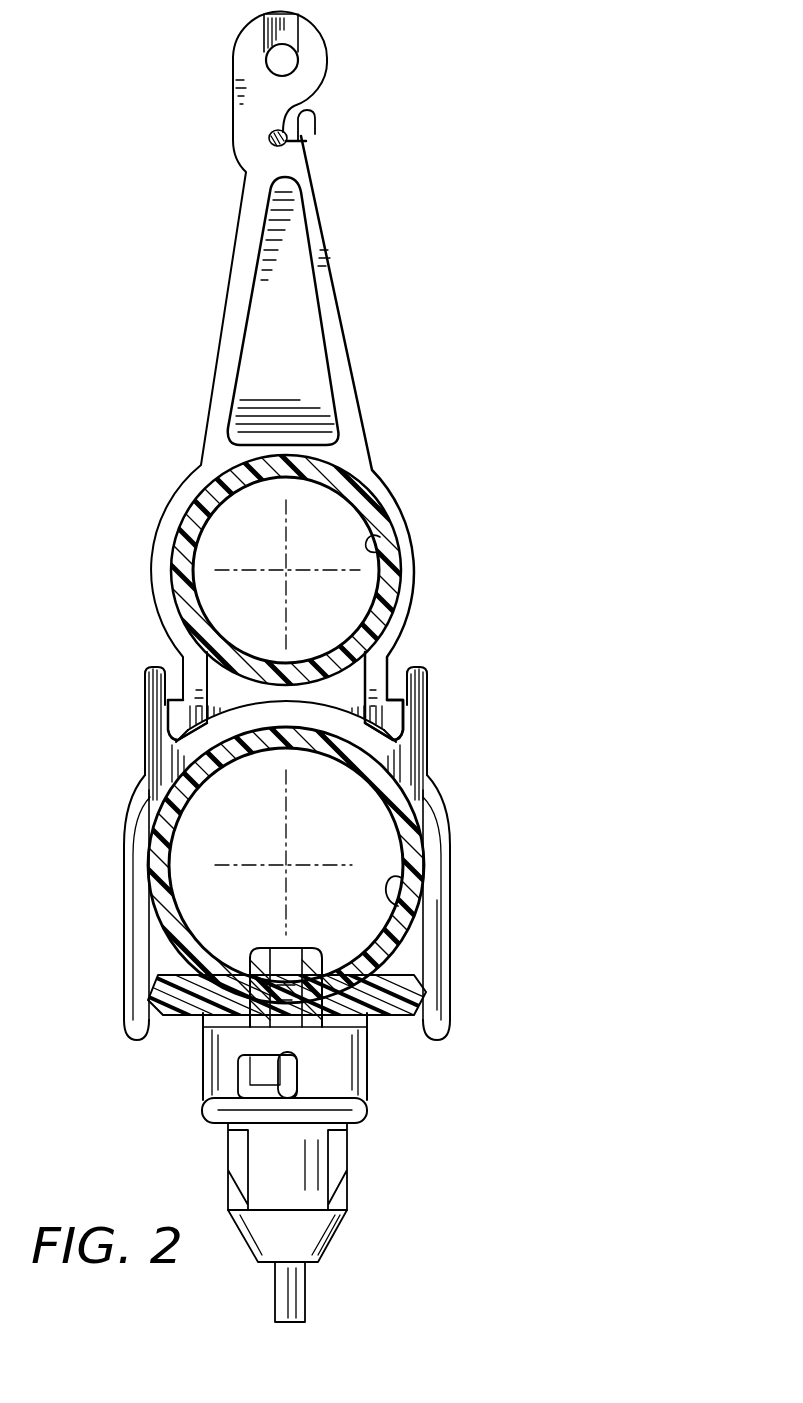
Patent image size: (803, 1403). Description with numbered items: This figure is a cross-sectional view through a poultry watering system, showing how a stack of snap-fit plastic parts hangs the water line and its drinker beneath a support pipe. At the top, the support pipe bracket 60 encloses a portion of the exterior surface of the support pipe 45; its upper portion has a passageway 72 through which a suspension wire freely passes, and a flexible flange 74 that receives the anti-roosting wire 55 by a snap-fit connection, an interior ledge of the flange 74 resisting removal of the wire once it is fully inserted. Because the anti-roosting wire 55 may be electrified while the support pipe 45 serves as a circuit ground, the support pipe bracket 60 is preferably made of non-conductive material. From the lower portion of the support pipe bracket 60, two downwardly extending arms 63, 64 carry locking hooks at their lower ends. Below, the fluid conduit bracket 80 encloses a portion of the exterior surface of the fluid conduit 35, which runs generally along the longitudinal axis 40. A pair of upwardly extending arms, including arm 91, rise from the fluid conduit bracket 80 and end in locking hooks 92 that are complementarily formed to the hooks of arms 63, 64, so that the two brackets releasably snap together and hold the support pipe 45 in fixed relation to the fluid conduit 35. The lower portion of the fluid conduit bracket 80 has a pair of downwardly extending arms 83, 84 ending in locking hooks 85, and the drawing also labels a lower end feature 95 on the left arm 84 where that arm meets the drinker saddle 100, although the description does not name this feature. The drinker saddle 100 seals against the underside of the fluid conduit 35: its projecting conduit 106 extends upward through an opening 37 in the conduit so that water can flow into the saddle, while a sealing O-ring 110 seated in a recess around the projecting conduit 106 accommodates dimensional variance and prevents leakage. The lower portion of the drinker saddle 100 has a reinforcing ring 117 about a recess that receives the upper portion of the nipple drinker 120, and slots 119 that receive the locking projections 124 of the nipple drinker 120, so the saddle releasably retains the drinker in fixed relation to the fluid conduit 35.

The support pipe bracket 60 is at (352, 433).
The passageway 72 is at (297, 62).
The flexible flange 74 is at (314, 115).
The anti-roosting wire 55 is at (300, 135).
The support pipe 45 is at (382, 546).
The downwardly extending arm 64 is at (185, 695).
The downwardly extending arm 63 is at (388, 667).
The fluid conduit bracket 80 is at (291, 843).
The upwardly extending arm 91 is at (162, 718).
The locking hook 92 is at (413, 728).
The longitudinal axis 40 is at (286, 864).
The fluid conduit 35 is at (398, 892).
The downwardly extending arm 84 is at (104, 925).
The downwardly extending arm 83 is at (469, 914).
The left shell end 95 is at (135, 1018).
The locking hook 85 is at (452, 1025).
The drinker saddle 100 is at (395, 1008).
The projecting conduit 106 is at (268, 965).
The opening 37 is at (292, 958).
The sealing O-ring 110 is at (240, 1030).
The slot 119 is at (302, 1050).
The locking projection 124 is at (298, 1082).
The reinforcing ring 117 is at (346, 1112).
The nipple drinker 120 is at (320, 1225).